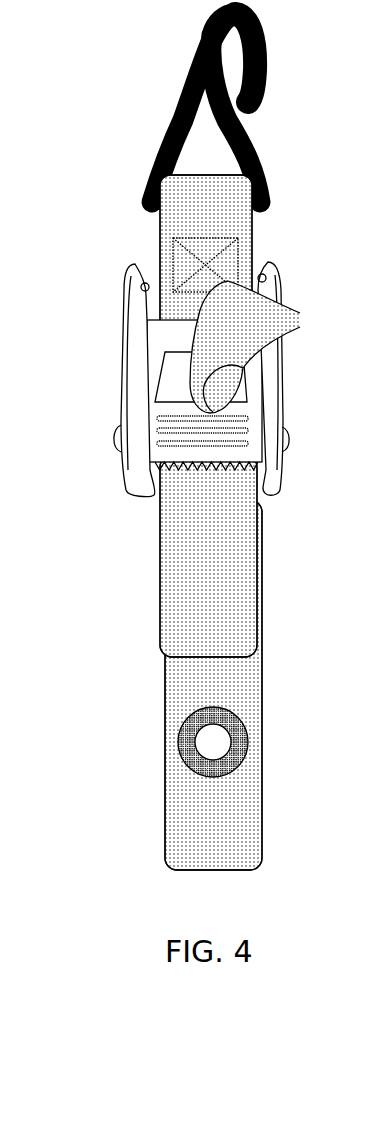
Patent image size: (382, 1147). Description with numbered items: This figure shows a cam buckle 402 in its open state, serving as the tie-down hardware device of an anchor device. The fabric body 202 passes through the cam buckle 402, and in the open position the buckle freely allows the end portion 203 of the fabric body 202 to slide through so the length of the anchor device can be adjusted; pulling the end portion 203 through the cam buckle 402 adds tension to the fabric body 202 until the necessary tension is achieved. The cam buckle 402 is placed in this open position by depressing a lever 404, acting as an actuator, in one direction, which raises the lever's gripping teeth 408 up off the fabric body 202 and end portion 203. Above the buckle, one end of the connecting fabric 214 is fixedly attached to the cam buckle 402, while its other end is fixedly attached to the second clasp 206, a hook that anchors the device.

The second clasp 206 is at (174, 118).
The connecting fabric 214 is at (190, 260).
The cam buckle 402 is at (90, 326).
The lever 404 is at (188, 413).
The gripping teeth 408 is at (198, 463).
The end portion 203 is at (190, 575).
The fabric body 202 is at (193, 798).